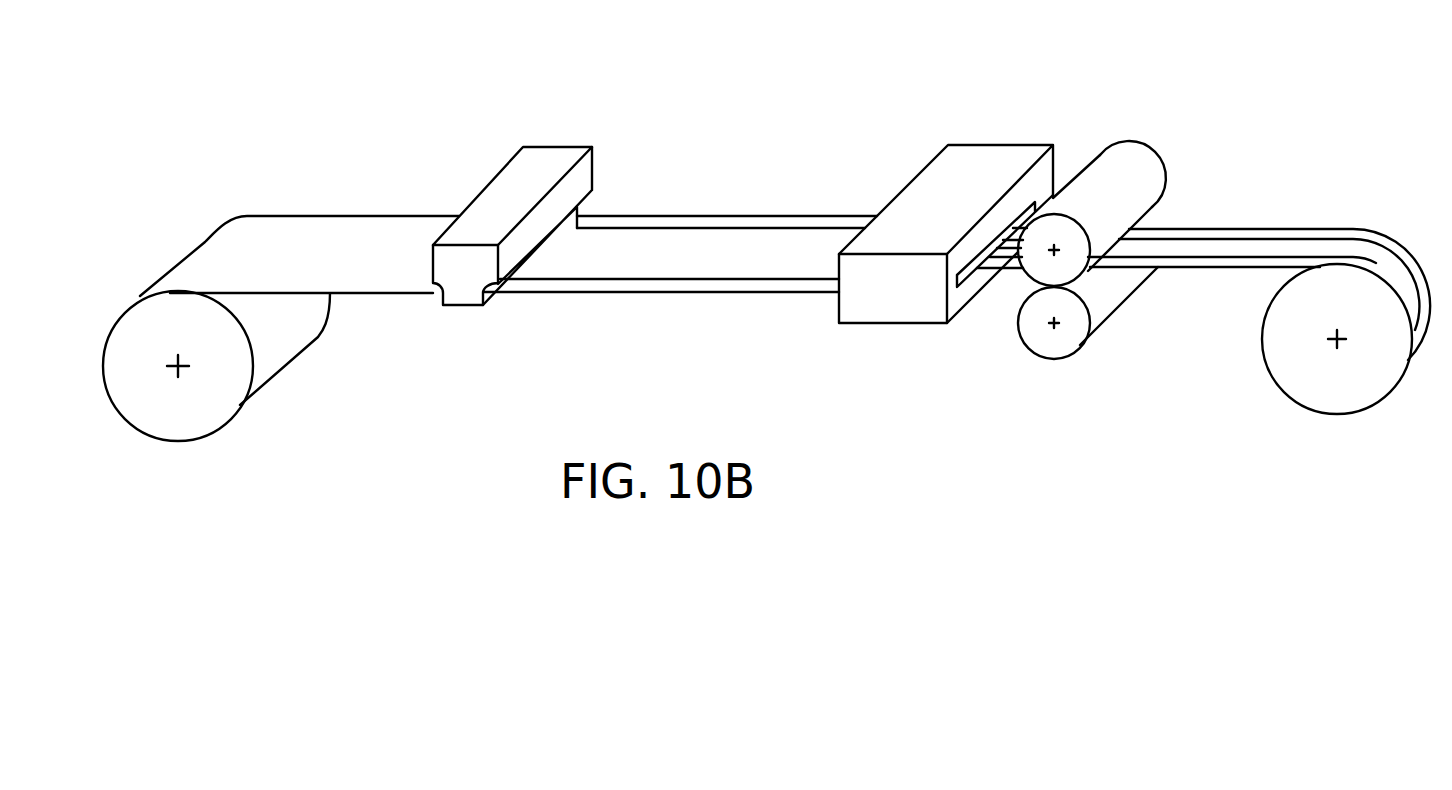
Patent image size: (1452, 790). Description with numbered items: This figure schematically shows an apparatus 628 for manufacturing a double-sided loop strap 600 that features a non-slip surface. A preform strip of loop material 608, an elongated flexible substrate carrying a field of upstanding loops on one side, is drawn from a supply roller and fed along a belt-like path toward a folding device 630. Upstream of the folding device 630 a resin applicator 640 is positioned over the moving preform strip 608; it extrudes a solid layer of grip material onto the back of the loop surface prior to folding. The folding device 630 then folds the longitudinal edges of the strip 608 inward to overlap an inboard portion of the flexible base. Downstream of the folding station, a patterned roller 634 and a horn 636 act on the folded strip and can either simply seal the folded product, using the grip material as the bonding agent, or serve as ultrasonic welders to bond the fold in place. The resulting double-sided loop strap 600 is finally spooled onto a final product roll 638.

The double-sided loop strap 600 is at (1242, 267).
The preform strip of loop material 608 is at (395, 297).
The apparatus 628 is at (1196, 116).
The folding device 630 is at (902, 308).
The patterned roller 634 is at (1053, 353).
The horn 636 is at (1025, 270).
The final product roll 638 is at (1313, 392).
The resin applicator 640 is at (508, 175).